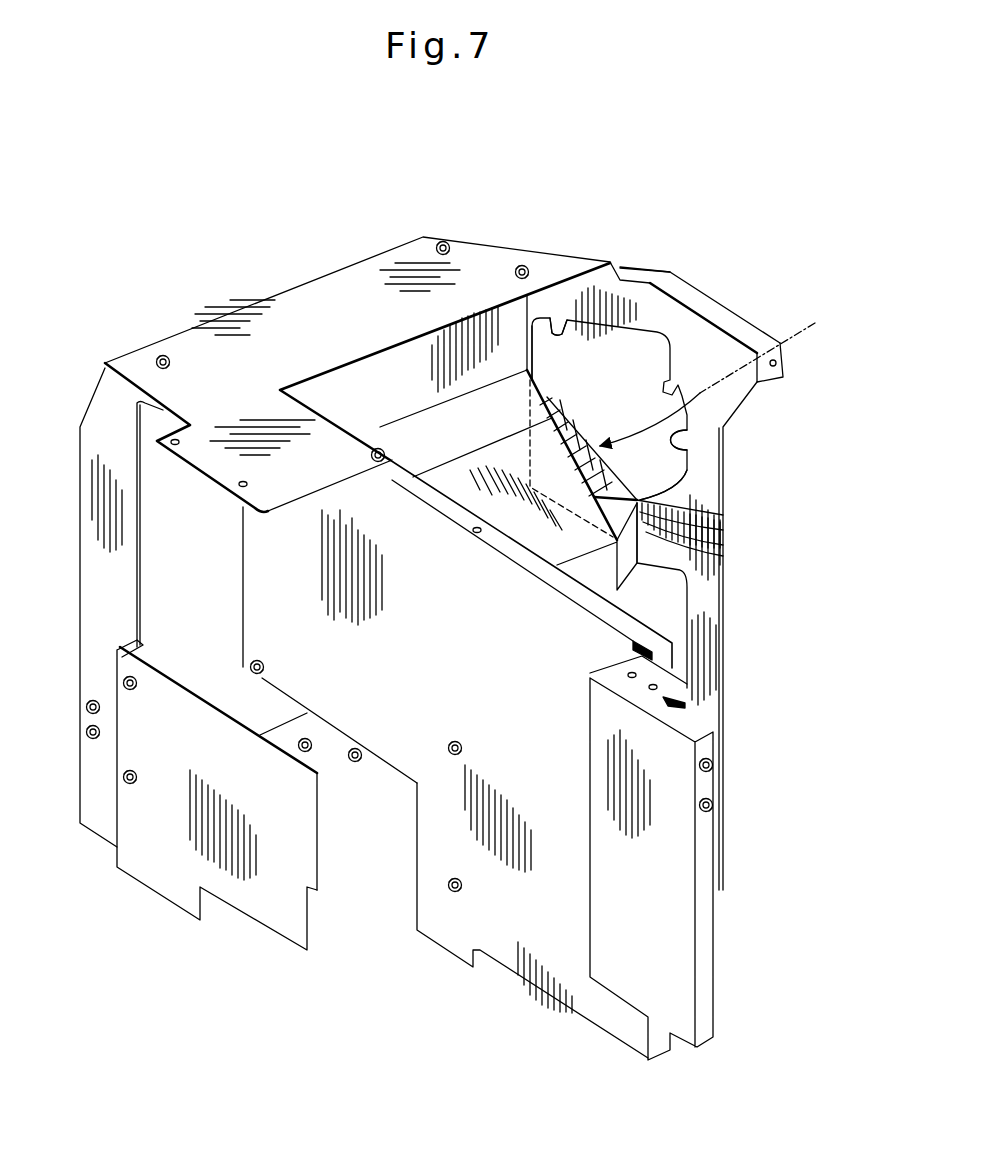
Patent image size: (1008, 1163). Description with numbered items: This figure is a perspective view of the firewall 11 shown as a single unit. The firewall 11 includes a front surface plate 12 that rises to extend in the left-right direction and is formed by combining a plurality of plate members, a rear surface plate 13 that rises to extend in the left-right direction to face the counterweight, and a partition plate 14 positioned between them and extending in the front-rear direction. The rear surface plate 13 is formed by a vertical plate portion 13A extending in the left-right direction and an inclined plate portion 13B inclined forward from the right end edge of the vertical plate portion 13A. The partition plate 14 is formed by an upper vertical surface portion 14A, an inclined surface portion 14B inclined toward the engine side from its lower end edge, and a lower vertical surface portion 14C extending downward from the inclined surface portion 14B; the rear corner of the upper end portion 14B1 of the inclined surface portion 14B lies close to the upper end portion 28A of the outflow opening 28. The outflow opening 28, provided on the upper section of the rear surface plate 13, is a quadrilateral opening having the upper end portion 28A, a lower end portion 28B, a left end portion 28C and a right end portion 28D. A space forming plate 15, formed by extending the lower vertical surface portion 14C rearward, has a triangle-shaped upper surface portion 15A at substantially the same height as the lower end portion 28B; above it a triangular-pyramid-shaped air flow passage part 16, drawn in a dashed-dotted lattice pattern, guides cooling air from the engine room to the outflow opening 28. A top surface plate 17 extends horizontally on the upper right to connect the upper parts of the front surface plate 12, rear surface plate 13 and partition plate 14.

The firewall 11 is at (327, 268).
The front surface plate 12 is at (425, 722).
The rear surface plate 13 is at (703, 603).
The vertical plate portion 13A is at (705, 493).
The inclined plate portion 13B is at (627, 293).
The partition plate 14 is at (402, 373).
The upper vertical surface portion 14A is at (317, 390).
The inclined surface portion 14B is at (462, 455).
The upper end portion of the inclined surface portion 14B1 is at (500, 383).
The lower vertical surface portion 14C is at (595, 588).
The space forming plate 15 is at (620, 533).
The upper surface portion 15A is at (670, 522).
The air flow passage part 16 is at (813, 323).
The top surface plate 17 is at (188, 358).
The outflow opening 28 is at (672, 352).
The upper end portion of the outflow opening 28A is at (555, 330).
The lower end portion of the outflow opening 28B is at (653, 493).
The left end portion of the outflow opening 28C is at (690, 440).
The right end portion of the outflow opening 28D is at (537, 358).